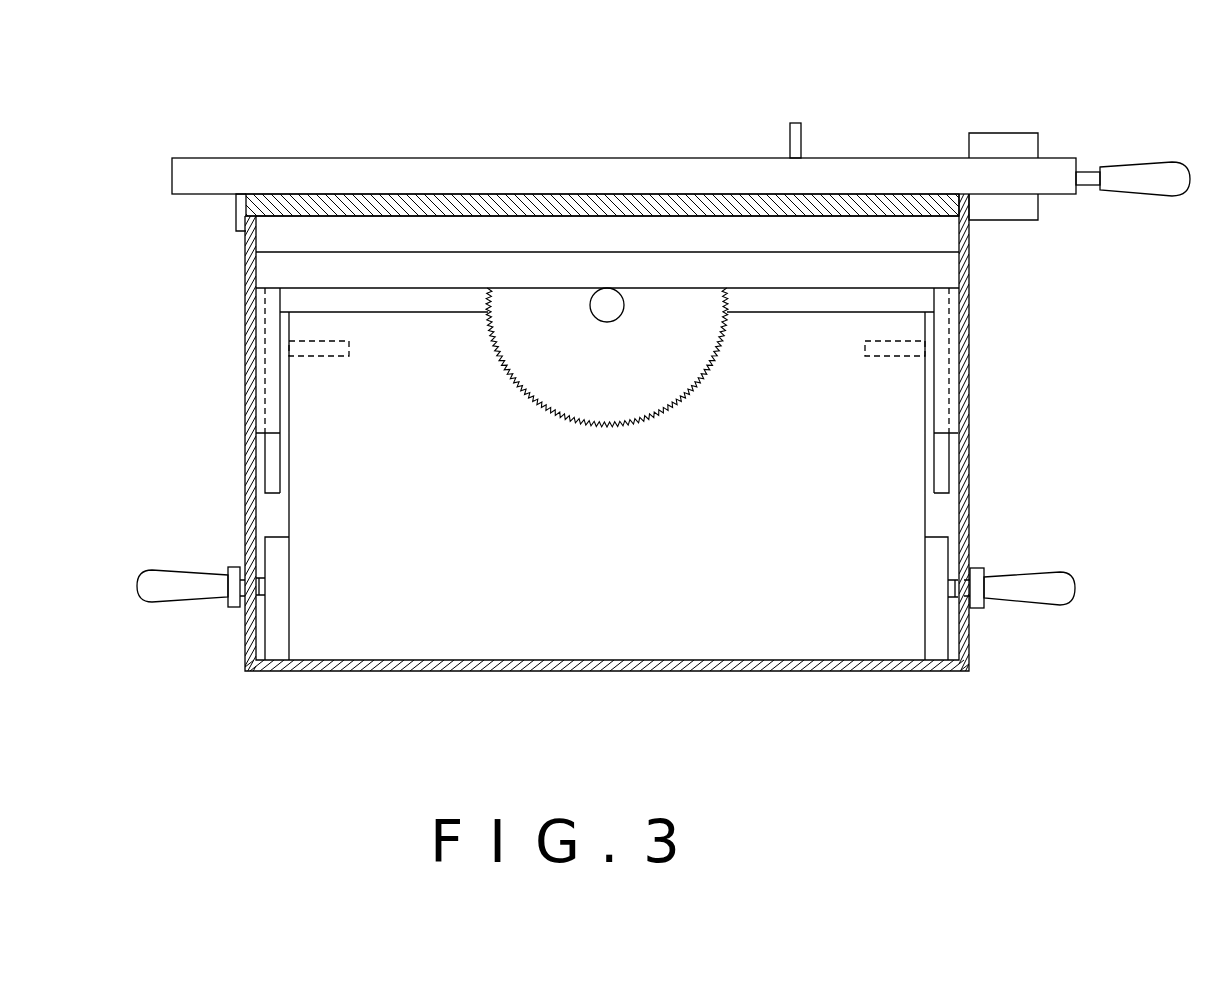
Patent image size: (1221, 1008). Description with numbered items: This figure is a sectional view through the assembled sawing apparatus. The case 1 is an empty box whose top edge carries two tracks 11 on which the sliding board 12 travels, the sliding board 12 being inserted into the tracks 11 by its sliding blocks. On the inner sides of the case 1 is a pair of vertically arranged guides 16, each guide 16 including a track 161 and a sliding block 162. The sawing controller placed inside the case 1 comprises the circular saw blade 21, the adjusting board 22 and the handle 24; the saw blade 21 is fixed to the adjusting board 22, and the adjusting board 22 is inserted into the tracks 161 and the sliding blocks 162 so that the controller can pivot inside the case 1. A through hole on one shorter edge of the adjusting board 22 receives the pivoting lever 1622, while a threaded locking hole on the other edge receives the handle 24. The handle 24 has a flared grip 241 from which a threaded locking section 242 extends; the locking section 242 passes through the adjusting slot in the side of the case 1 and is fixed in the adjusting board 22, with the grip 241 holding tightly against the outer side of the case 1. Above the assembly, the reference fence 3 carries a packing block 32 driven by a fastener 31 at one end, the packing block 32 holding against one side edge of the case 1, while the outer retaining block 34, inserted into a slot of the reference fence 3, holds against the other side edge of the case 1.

The case 1 is at (355, 665).
The reference fence 3 is at (889, 167).
The tracks 11 is at (952, 278).
The sliding board 12 is at (465, 205).
The guides 16 is at (724, 474).
The circular saw blade 21 is at (553, 367).
The adjusting board 22 is at (937, 233).
The handle 24 is at (606, 654).
The fastener 31 is at (1153, 172).
The packing block 32 is at (1003, 148).
The retaining blocks 34 is at (794, 135).
The track 161 is at (953, 393).
The sliding block 162 is at (943, 462).
The grip 241 is at (162, 590).
The locking section 242 is at (247, 630).
The pivoting lever 1622 is at (903, 348).